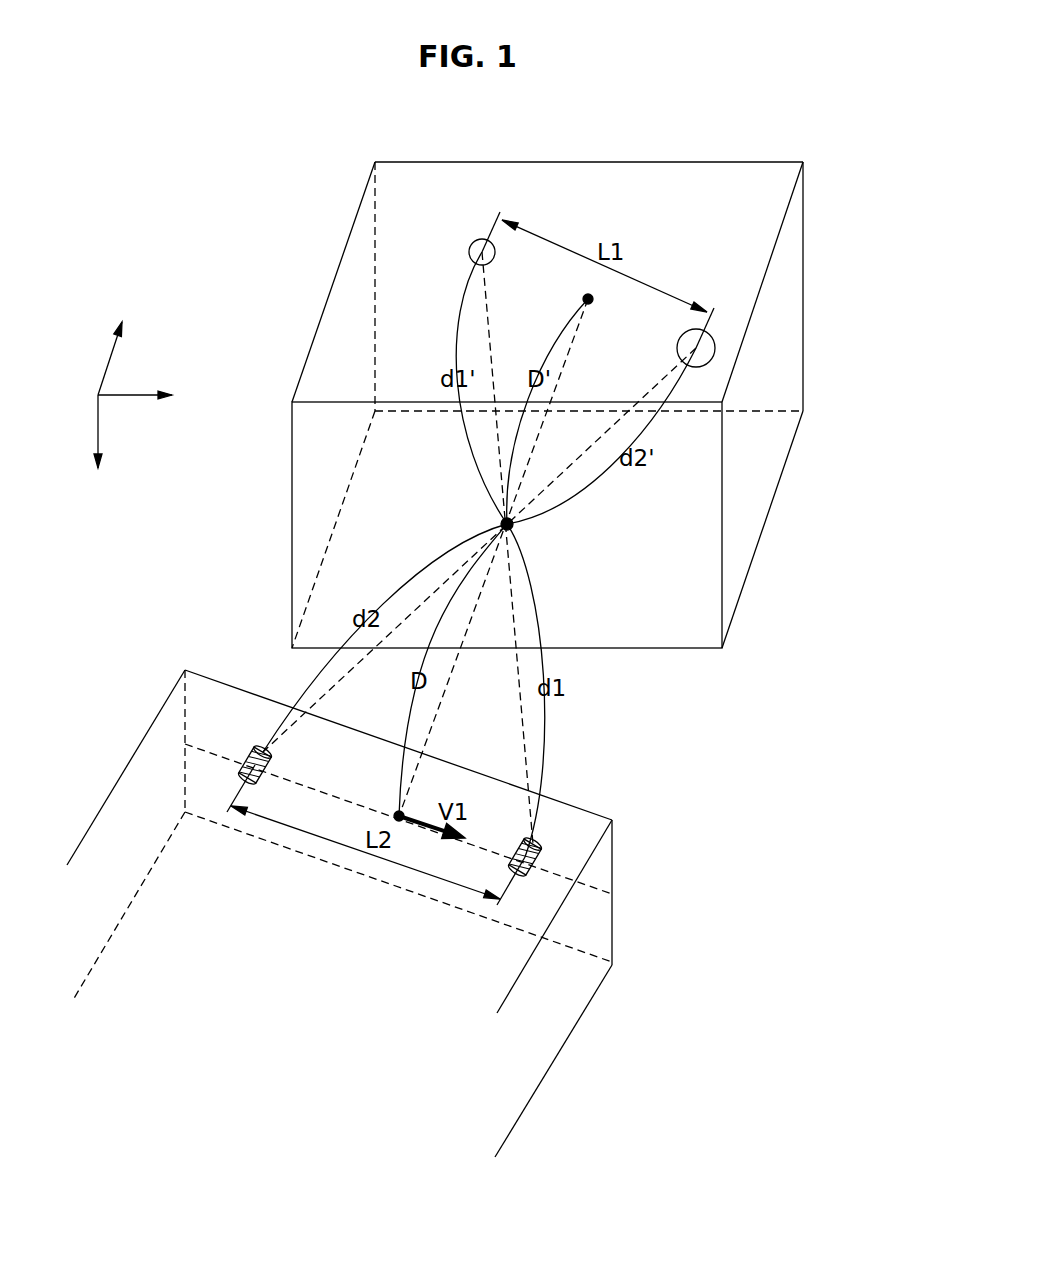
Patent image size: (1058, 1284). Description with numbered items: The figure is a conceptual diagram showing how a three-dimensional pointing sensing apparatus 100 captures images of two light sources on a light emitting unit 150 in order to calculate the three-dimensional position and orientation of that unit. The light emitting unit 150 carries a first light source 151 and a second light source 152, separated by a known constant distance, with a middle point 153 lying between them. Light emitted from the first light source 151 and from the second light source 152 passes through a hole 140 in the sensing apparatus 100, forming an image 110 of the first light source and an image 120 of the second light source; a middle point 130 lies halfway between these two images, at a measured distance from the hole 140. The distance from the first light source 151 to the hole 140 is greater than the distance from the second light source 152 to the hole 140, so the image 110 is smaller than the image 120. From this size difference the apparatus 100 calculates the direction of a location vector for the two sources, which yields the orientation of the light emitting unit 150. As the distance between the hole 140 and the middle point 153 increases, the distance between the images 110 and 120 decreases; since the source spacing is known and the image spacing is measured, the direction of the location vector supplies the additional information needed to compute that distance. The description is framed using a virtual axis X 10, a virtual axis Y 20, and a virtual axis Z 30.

The virtual axis X 10 is at (120, 298).
The virtual axis Y 20 is at (193, 383).
The virtual axis Z 30 is at (112, 484).
The 3D pointing sensing apparatus 100 is at (588, 161).
The image of the first light source 110 is at (474, 243).
The image of the second light source 120 is at (717, 334).
The middle point 130 is at (590, 298).
The hole 140 is at (507, 524).
The light emitting unit 150 is at (547, 998).
The first light source 151 is at (543, 852).
The second light source 152 is at (263, 749).
The middle point 153 is at (399, 816).